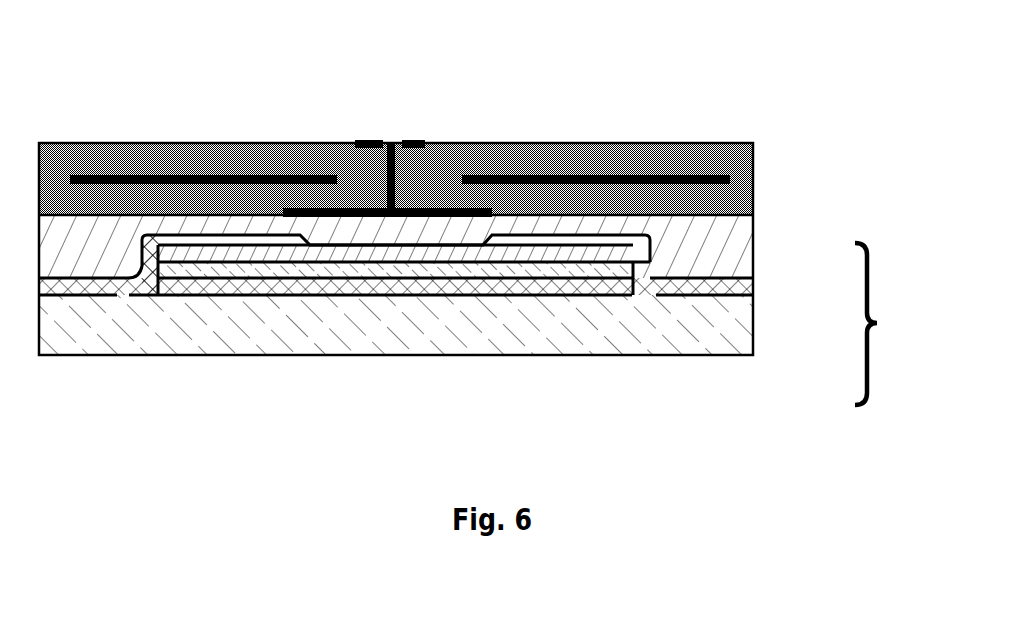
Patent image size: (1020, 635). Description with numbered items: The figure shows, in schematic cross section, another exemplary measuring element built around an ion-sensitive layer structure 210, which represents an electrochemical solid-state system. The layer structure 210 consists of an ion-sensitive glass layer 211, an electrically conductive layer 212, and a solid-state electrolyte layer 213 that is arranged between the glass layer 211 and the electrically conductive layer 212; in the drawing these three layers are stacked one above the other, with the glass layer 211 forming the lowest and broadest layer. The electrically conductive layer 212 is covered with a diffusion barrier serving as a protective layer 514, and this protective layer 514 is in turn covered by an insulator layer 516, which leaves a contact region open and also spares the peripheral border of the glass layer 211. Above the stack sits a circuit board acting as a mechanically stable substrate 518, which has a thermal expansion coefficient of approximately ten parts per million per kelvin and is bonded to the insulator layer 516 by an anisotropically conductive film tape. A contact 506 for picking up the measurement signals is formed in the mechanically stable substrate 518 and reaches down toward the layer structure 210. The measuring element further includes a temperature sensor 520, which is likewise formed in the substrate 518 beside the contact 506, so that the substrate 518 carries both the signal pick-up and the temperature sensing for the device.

The ion-sensitive layer structure 210 is at (894, 324).
The ion-sensitive glass layer 211 is at (632, 327).
The electrically conductive layer 212 is at (620, 268).
The solid-state electrolyte layer 213 is at (615, 290).
The contact 506 is at (397, 143).
The protective layer 514 is at (617, 252).
The insulator layer 516 is at (120, 290).
The mechanically stable substrate 518 is at (170, 157).
The temperature sensor 520 is at (578, 178).